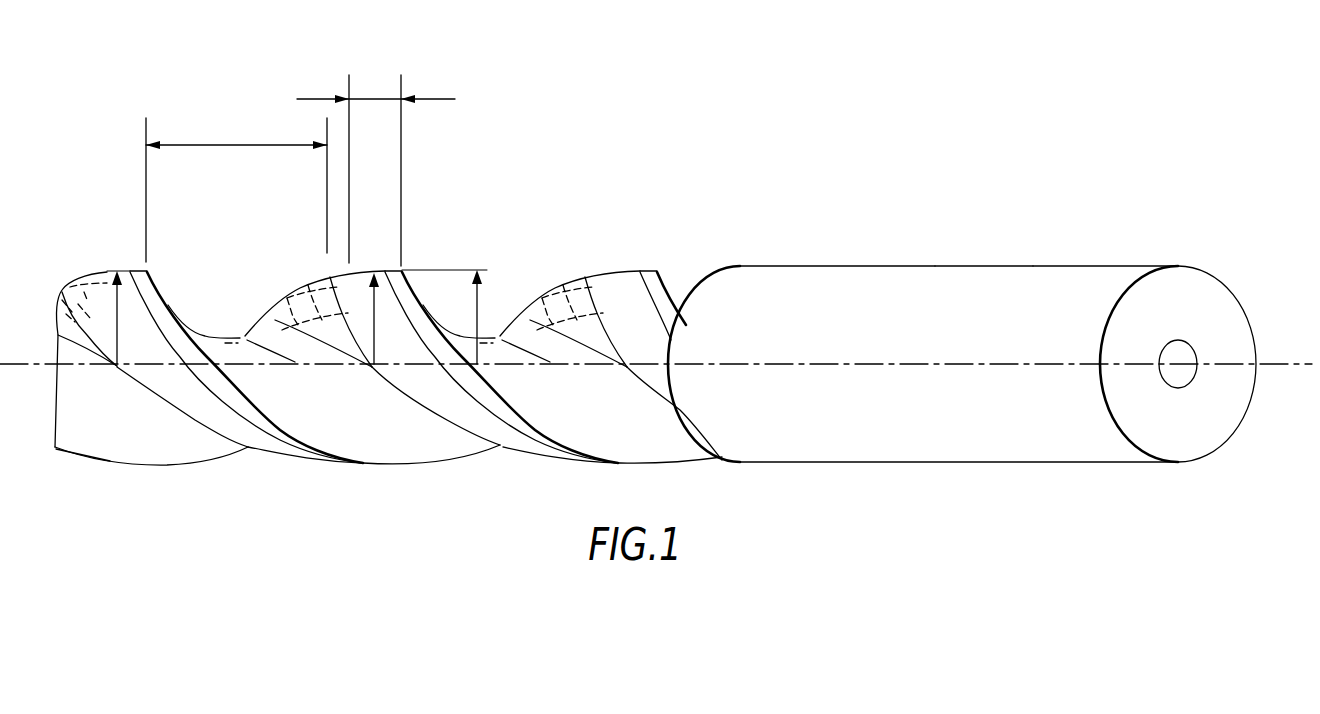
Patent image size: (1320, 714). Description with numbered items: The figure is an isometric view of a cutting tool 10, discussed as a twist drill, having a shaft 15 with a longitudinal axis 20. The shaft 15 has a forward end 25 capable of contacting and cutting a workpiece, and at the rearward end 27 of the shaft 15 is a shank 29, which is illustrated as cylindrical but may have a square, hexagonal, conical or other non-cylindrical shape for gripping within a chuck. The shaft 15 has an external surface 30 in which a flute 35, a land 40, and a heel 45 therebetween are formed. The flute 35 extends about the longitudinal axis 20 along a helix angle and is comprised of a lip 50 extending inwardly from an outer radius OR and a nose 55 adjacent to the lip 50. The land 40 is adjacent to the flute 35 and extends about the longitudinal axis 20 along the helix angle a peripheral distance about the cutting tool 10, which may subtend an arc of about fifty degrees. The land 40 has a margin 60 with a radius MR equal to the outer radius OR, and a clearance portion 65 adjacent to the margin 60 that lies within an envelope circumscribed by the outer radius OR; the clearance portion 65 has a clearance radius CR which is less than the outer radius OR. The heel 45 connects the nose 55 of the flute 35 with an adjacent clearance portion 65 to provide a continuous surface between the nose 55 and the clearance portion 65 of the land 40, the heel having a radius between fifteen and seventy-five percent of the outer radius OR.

The cutting tool 10 is at (592, 159).
The shaft 15 is at (883, 266).
The longitudinal axis 20 is at (1272, 363).
The forward end 25 is at (60, 294).
The rearward end 27 is at (933, 266).
The shank 29 is at (1033, 266).
The external surface 30 is at (860, 437).
The flute 35 is at (242, 143).
The land 40 is at (376, 97).
The heel 45 is at (348, 270).
The lip 50 is at (148, 278).
The nose 55 is at (212, 336).
The margin 60 is at (393, 268).
The clearance portion 65 is at (367, 270).
The margin radius MR is at (118, 327).
The clearance radius CR is at (375, 327).
The outer radius OR is at (478, 313).